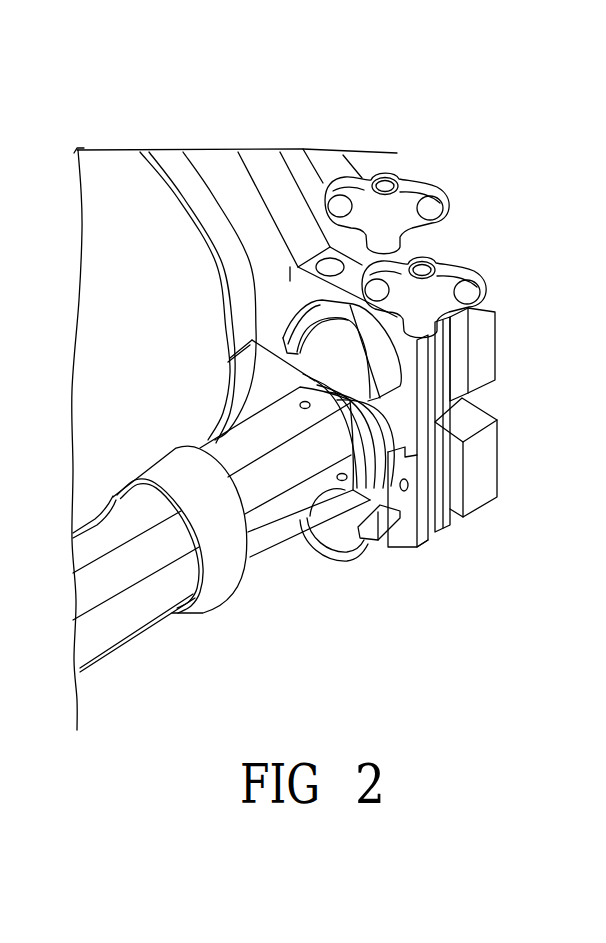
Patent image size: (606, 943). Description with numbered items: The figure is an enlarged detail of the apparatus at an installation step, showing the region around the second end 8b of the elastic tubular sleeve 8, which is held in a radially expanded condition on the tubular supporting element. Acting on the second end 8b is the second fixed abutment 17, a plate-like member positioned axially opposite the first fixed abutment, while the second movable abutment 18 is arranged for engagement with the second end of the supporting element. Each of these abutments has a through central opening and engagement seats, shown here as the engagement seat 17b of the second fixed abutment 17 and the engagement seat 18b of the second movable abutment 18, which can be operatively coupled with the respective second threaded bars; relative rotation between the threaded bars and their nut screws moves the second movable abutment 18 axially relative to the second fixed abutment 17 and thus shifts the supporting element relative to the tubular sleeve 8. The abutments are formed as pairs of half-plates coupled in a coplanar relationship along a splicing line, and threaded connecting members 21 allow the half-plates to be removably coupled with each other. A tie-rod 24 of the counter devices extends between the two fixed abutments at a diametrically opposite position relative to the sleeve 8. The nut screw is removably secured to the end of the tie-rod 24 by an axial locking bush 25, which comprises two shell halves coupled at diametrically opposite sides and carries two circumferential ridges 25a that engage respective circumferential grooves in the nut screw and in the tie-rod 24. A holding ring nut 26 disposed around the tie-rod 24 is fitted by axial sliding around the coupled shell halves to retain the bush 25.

The elastic tubular sleeve 8 is at (113, 347).
The second end of the tubular sleeve 8b is at (117, 198).
The second fixed abutment 17 is at (270, 185).
The engagement seat 17b is at (448, 450).
The second movable abutment 18 is at (326, 165).
The engagement seat 18b is at (466, 418).
The threaded connecting members 21 is at (385, 186).
The tie-rod 24 is at (115, 612).
The axial locking bush 25 is at (385, 372).
The circumferential ridges 25a is at (357, 560).
The holding ring nut 26 is at (218, 578).